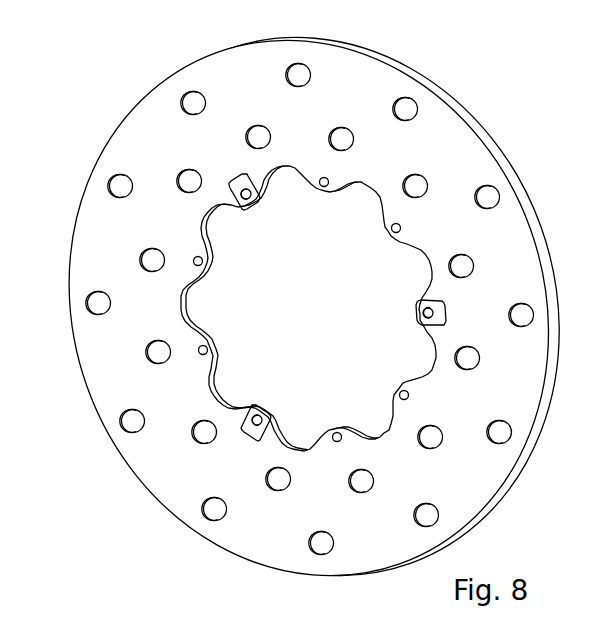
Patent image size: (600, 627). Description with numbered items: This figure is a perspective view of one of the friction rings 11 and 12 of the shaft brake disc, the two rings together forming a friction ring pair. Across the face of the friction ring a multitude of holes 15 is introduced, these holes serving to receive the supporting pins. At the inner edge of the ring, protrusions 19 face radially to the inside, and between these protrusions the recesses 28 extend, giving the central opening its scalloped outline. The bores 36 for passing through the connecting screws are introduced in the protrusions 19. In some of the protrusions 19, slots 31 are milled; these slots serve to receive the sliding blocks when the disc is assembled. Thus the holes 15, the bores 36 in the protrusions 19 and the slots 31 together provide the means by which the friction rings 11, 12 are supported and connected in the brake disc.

The friction ring 11 is at (148, 103).
The friction ring 12 is at (148, 103).
The holes 15 is at (473, 265).
The protrusions 19 is at (327, 187).
The recesses 28 is at (422, 253).
The slots 31 is at (248, 178).
The bores 36 is at (318, 190).